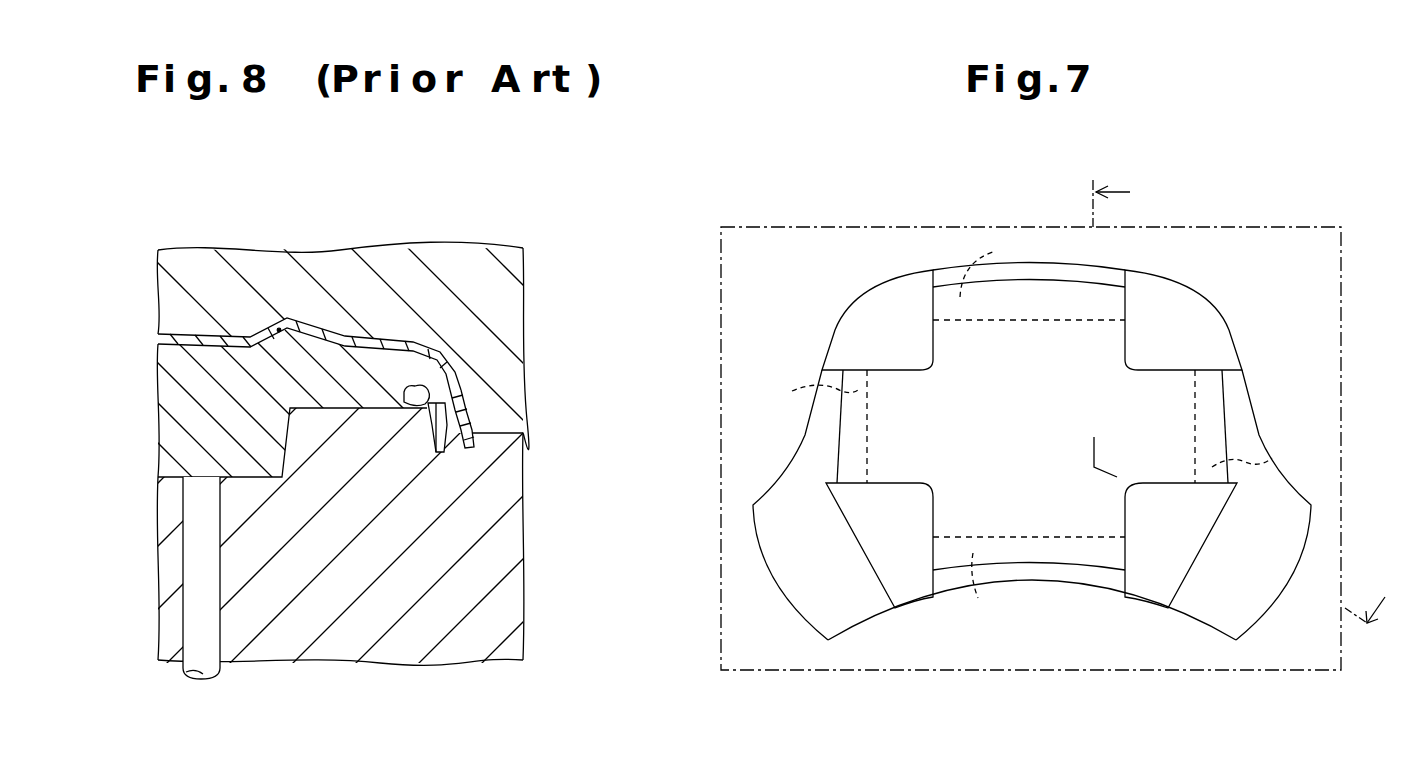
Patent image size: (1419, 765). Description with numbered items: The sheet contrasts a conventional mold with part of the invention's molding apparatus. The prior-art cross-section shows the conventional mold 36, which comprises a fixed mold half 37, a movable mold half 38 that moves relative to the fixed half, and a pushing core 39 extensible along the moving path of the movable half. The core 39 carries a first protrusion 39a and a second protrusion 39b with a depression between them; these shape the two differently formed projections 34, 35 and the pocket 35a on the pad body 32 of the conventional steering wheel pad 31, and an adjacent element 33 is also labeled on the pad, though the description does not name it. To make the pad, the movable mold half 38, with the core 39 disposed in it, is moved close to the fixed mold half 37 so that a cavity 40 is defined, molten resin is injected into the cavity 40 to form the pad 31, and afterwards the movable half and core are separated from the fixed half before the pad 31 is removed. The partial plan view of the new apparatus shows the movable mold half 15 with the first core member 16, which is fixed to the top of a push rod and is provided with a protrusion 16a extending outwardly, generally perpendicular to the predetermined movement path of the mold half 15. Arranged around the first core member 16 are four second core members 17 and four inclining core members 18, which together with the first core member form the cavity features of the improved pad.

In FIG. 7, the movable mold half 15 is at (1330, 343).
In FIG. 7, the first core member 16 is at (1298, 373).
In FIG. 7, the protrusion 16a is at (1068, 288).
In FIG. 7, the second core member 17 is at (918, 285).
In FIG. 7, the inclining core member 18 is at (1041, 433).
In FIG. 8, the steering wheel pad 31 is at (503, 294).
In FIG. 8, the pad body 32 is at (440, 374).
In FIG. 8, the bump 33 is at (460, 377).
In FIG. 8, the projection 34 is at (404, 396).
In FIG. 8, the projection 35 is at (421, 420).
In FIG. 8, the pocket 35a is at (470, 402).
In FIG. 8, the mold 36 is at (548, 265).
In FIG. 8, the fixed mold half 37 is at (521, 352).
In FIG. 8, the movable mold half 38 is at (518, 466).
In FIG. 8, the pushing core 39 is at (170, 404).
In FIG. 8, the first protrusion 39a is at (372, 341).
In FIG. 8, the second protrusion 39b is at (395, 413).
In FIG. 8, the cavity 40 is at (279, 330).